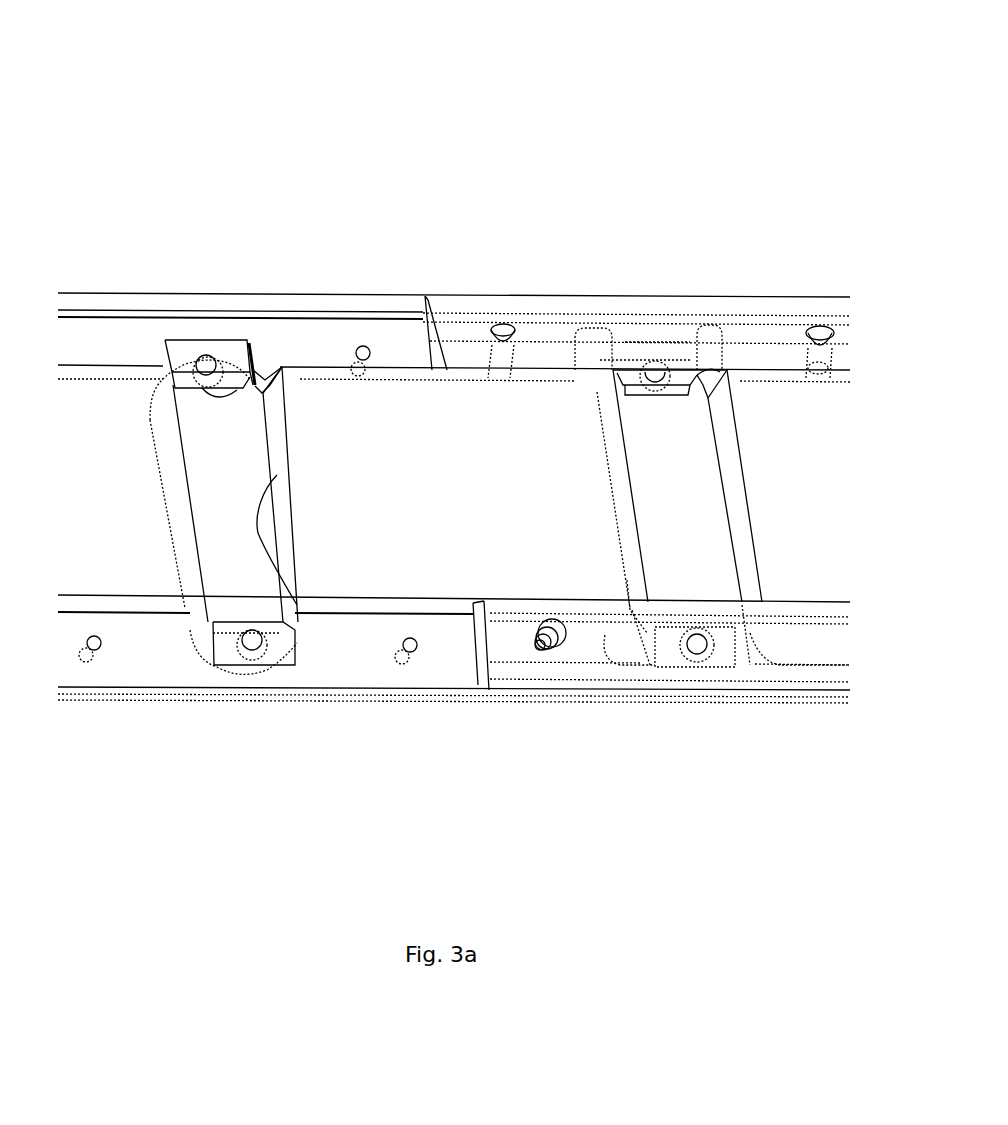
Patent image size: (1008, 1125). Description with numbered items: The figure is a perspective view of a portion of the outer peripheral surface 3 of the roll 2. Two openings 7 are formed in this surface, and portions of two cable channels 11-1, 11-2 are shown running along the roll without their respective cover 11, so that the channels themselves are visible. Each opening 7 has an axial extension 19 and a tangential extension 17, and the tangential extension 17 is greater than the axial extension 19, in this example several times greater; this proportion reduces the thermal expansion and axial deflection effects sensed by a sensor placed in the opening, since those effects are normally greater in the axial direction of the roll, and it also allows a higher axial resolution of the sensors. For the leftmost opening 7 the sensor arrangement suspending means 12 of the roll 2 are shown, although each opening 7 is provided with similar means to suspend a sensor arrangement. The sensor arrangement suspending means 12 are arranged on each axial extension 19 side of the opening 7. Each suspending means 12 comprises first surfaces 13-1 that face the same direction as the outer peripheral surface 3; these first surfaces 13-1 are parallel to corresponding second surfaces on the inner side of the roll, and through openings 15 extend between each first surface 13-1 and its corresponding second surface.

The roll 2 is at (428, 136).
The outer peripheral surface 3 is at (527, 441).
The opening 7 is at (207, 623).
The cover 11 is at (677, 325).
The cable channel 11-1 is at (421, 298).
The cable channel 11-2 is at (423, 665).
The sensor arrangement suspending means 12 is at (178, 352).
The first surface 13-1 is at (193, 342).
The through opening 15 is at (206, 365).
The tangential extension 17 is at (297, 605).
The axial extension 19 is at (252, 380).